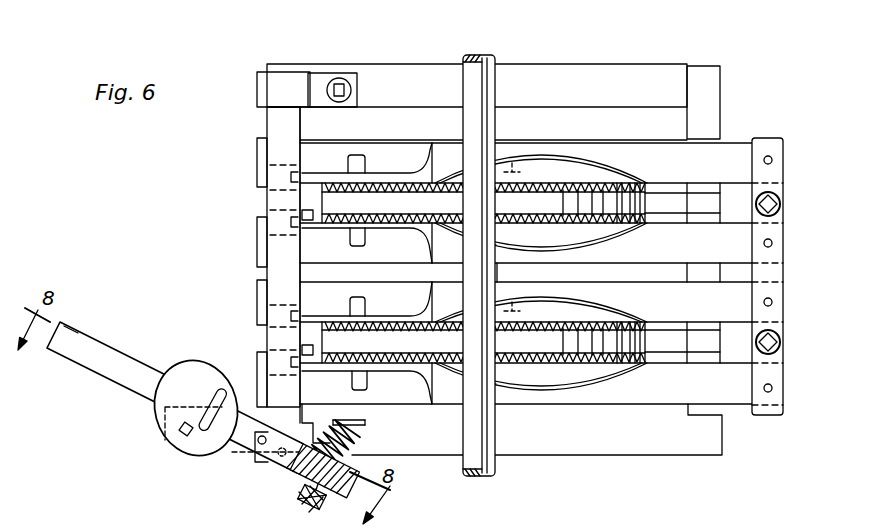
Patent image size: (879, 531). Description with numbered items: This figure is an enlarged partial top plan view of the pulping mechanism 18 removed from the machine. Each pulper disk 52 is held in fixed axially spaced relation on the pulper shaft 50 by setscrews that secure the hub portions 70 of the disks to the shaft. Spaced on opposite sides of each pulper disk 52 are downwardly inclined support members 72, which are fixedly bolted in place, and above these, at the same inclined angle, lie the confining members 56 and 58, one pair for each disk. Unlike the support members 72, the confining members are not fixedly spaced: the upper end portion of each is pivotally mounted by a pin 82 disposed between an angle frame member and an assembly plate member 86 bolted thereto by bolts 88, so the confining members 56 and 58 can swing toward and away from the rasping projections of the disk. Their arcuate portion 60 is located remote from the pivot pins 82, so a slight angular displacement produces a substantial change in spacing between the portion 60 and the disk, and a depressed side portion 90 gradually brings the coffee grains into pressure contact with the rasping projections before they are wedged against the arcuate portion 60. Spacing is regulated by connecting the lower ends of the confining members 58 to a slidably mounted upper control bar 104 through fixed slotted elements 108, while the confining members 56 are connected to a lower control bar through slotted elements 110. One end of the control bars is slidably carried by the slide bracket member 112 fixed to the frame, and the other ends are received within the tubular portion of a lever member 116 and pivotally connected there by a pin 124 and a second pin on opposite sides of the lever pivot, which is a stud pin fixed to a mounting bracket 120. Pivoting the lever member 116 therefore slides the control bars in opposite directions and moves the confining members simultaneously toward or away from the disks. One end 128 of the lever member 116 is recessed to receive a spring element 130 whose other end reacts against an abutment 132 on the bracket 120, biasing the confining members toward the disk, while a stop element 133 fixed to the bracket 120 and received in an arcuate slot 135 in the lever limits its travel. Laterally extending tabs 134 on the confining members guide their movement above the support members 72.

The pulping mechanism 18 is at (168, 225).
The pulper shaft 50 is at (490, 76).
The pulper disk 52 is at (584, 202).
The confining member 56 is at (647, 157).
The confining member 58 is at (628, 254).
The arcuate portion 60 is at (400, 165).
The hub portion 70 is at (514, 168).
The support member 72 is at (380, 150).
The pin 82 is at (768, 156).
The assembly plate member 86 is at (780, 140).
The bolts 88 is at (780, 200).
The depressed side portion 90 is at (567, 158).
The upper control bar 104 is at (273, 128).
The slotted elements 108 is at (282, 211).
The slotted elements 110 is at (282, 349).
The slide bracket member 112 is at (270, 85).
The lever member 116 is at (126, 362).
The mounting bracket 120 is at (445, 445).
The pin 124 is at (254, 441).
The end of lever member 128 is at (350, 483).
The spring element 130 is at (362, 443).
The abutment 132 is at (348, 418).
The stop element 133 is at (180, 432).
The laterally extending tabs 134 is at (357, 155).
The arcuate slot 135 is at (197, 385).